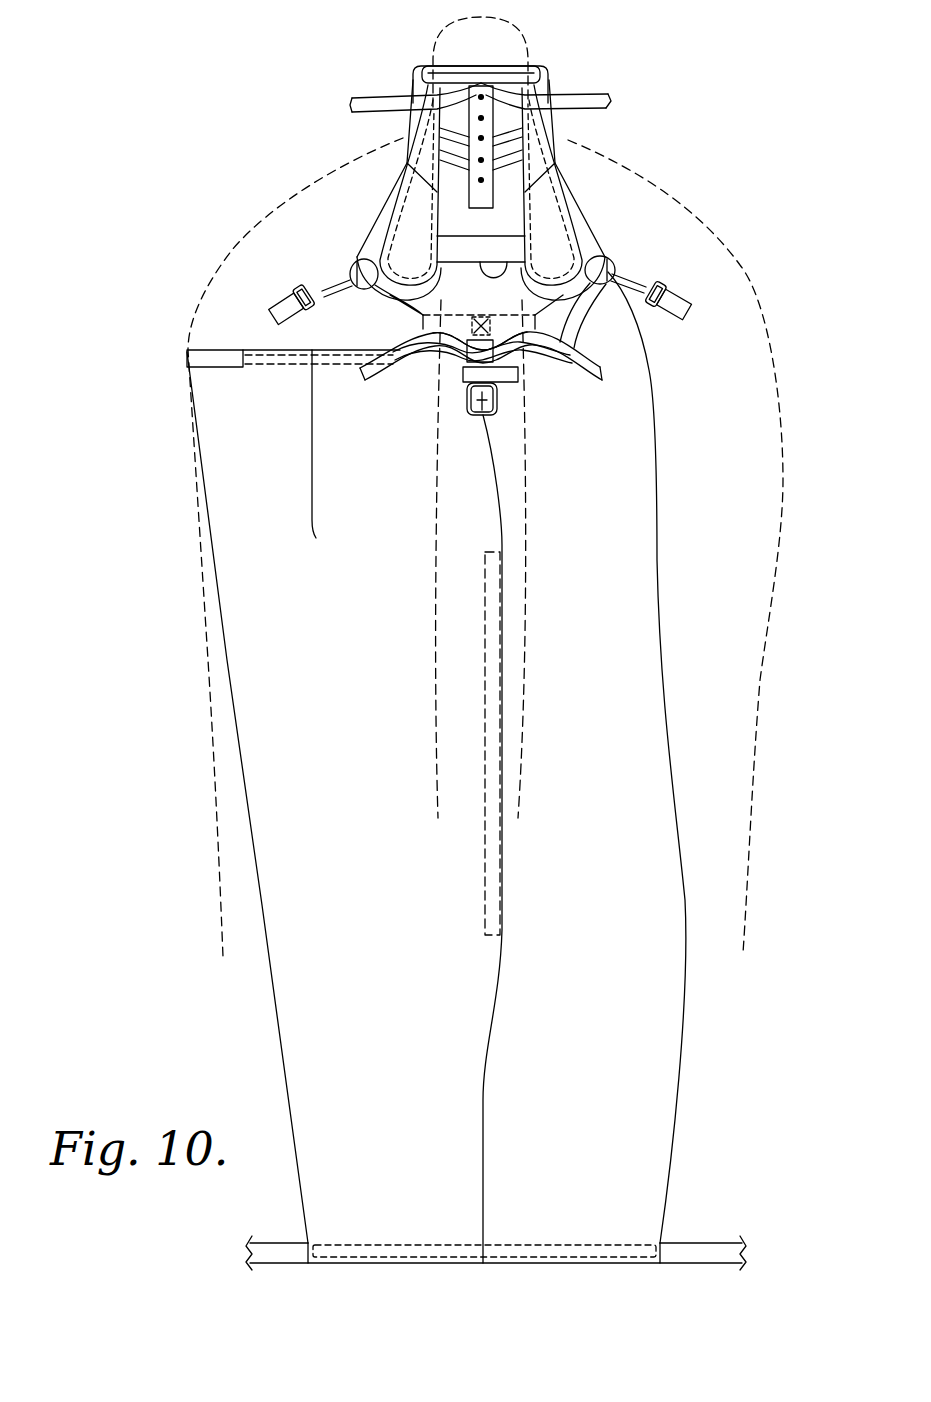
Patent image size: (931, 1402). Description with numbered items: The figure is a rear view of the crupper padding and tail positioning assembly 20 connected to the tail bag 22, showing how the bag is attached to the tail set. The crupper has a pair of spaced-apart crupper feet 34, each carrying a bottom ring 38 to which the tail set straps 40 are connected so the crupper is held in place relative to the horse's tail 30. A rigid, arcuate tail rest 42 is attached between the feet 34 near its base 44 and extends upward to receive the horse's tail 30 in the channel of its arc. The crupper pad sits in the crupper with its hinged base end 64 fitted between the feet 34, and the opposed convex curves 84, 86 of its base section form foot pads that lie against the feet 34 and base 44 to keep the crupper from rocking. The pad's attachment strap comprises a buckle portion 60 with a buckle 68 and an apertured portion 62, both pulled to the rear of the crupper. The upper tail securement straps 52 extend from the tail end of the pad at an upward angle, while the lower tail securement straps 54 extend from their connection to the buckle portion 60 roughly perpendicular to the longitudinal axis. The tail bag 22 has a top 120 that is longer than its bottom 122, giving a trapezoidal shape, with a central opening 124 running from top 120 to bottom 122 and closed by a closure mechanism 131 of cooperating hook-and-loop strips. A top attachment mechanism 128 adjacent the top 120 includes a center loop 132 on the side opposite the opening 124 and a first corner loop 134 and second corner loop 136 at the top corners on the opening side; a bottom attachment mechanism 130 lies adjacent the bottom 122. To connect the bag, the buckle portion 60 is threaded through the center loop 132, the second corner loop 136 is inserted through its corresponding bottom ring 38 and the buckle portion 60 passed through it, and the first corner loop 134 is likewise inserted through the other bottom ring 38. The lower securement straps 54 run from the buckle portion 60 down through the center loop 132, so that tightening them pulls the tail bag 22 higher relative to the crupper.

The crupper padding and tail positioning assembly 20 is at (572, 68).
The tail bag 22 is at (667, 1062).
The horse's tail 30 is at (518, 26).
The crupper feet 34 is at (410, 212).
The bottom ring 38 is at (352, 268).
The tail set straps 40 is at (290, 308).
The tail rest 42 is at (497, 215).
The base of the tail rest 44 is at (527, 272).
The upper tail securement straps 52 is at (611, 99).
The lower tail securement straps 54 is at (604, 371).
The buckle portion 60 is at (469, 412).
The apertured portion 62 is at (469, 128).
The hinged base end 64 is at (437, 327).
The buckle 68 is at (497, 413).
The convex curve 84 is at (372, 243).
The convex curve 86 is at (588, 230).
The top 120 is at (253, 348).
The bottom 122 is at (443, 1262).
The opening 124 is at (500, 988).
The top attachment mechanism 128 is at (556, 392).
The bottom attachment mechanism 130 is at (688, 1248).
The closure mechanism 131 is at (497, 685).
The center loop 132 is at (478, 352).
The first corner loop 134 is at (205, 360).
The second corner loop 136 is at (480, 373).